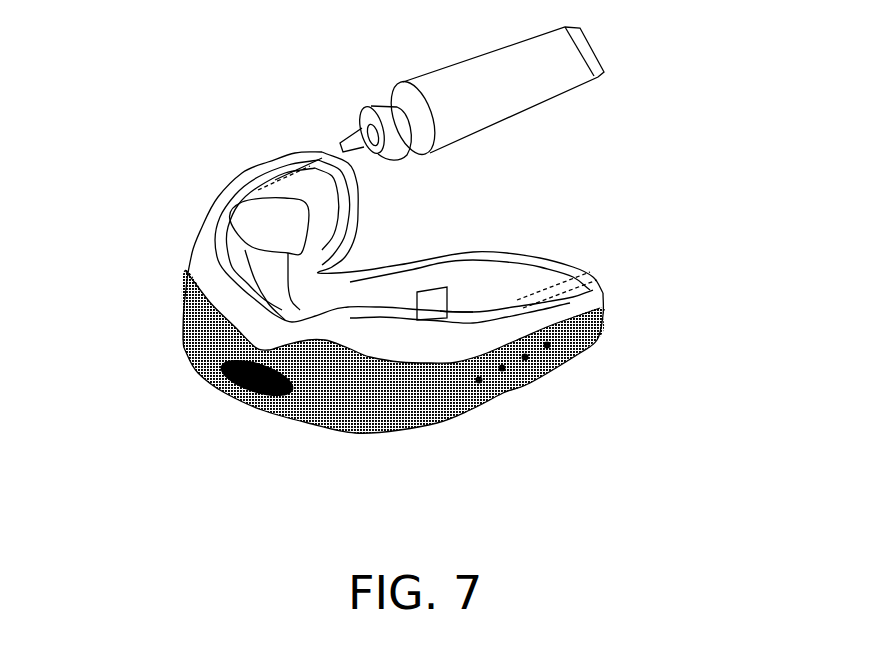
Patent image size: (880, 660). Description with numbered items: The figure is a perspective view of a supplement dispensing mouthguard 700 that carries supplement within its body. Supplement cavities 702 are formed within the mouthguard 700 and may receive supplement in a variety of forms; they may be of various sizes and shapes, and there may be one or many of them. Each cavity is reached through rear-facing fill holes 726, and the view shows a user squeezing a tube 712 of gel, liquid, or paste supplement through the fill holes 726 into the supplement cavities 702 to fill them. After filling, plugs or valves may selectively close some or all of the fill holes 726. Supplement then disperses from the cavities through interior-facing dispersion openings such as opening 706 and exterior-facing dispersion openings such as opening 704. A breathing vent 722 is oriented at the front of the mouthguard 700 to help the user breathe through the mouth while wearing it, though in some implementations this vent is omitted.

The supplement dispensing mouthguard 700 is at (128, 182).
The supplement cavities 702 is at (258, 200).
The exterior-facing dispersion opening 704 is at (451, 300).
The interior-facing dispersion opening 706 is at (476, 372).
The tube 712 is at (518, 100).
The breathing vent 722 is at (252, 392).
The rear-facing fill holes 726 is at (331, 155).